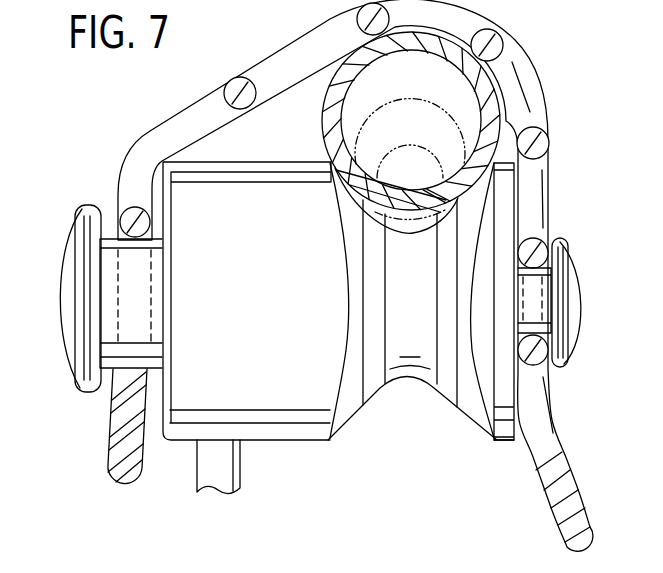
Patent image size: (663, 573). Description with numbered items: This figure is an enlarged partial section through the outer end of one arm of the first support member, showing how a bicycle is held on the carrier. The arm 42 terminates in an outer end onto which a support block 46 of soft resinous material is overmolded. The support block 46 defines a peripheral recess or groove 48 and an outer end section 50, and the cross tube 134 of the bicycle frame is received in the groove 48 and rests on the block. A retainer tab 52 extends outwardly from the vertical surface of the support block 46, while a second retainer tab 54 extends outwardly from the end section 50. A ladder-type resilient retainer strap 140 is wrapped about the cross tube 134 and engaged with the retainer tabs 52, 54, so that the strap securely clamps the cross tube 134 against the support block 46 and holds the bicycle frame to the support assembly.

The cross tube 134 is at (326, 58).
The ladder-type resilient retainer strap 140 is at (519, 36).
The arm 42 is at (195, 479).
The support block 46 is at (271, 442).
The peripheral recess or groove 48 is at (402, 376).
The outer end section 50 is at (497, 441).
The retainer tab 52 is at (60, 308).
The retainer tab 54 is at (582, 302).